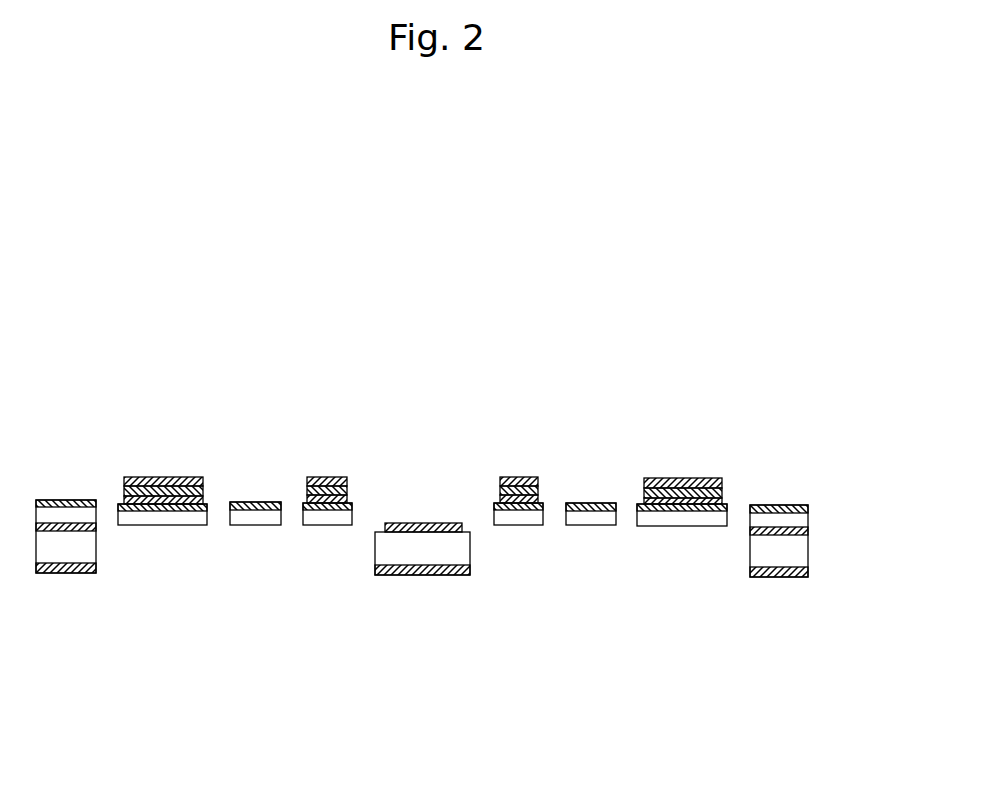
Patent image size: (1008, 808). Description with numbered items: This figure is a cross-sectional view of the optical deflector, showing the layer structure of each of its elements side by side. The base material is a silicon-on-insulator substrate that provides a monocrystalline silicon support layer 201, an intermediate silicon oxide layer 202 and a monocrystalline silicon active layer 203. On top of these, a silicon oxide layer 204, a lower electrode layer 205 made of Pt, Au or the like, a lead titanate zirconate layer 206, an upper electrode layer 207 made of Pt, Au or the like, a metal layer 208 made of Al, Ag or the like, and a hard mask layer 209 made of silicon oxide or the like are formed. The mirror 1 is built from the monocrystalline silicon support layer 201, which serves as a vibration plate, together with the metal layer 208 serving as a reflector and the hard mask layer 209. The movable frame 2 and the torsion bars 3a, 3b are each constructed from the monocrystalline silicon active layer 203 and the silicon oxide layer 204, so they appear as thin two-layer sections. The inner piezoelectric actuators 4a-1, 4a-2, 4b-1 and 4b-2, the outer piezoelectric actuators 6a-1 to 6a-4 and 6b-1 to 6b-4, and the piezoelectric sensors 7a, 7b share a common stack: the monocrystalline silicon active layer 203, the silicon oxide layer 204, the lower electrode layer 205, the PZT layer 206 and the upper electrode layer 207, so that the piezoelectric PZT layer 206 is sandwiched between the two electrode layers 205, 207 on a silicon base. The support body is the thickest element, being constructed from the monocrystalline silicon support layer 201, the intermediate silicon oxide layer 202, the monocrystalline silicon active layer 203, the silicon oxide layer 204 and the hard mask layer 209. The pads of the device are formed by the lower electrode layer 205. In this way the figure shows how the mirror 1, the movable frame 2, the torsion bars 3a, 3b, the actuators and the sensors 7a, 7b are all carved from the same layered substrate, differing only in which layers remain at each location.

The mirror 1 is at (433, 461).
The metal layer 208 is at (452, 524).
The movable frame 2 is at (254, 435).
The torsion bar 3a is at (257, 489).
The torsion bar 3b is at (592, 489).
The inner piezoelectric actuator 4a-1 is at (330, 464).
The inner piezoelectric actuator 4a-2 is at (332, 381).
The piezoelectric sensor 7a is at (332, 370).
The inner piezoelectric actuator 4b-1 is at (520, 466).
The inner piezoelectric actuator 4b-2 is at (522, 381).
The piezoelectric sensor 7b is at (523, 370).
The outer piezoelectric actuator 6a-1 is at (133, 268).
The outer piezoelectric actuator 6a-4 is at (152, 361).
The outer piezoelectric actuator 6b-1 is at (735, 351).
The outer piezoelectric actuator 6b-4 is at (735, 362).
The monocrystalline silicon support layer 201 is at (808, 555).
The intermediate silicon oxide layer 202 is at (808, 528).
The monocrystalline silicon active layer 203 is at (808, 517).
The silicon oxide layer 204 is at (808, 508).
The lower electrode layer 205 is at (722, 505).
The PZT layer 206 is at (722, 496).
The upper electrode layer 207 is at (722, 487).
The hard mask layer 209 is at (750, 572).